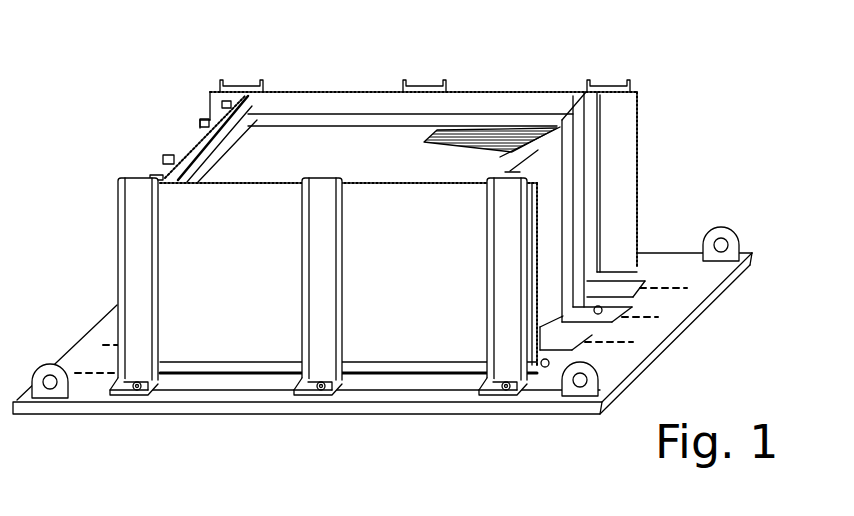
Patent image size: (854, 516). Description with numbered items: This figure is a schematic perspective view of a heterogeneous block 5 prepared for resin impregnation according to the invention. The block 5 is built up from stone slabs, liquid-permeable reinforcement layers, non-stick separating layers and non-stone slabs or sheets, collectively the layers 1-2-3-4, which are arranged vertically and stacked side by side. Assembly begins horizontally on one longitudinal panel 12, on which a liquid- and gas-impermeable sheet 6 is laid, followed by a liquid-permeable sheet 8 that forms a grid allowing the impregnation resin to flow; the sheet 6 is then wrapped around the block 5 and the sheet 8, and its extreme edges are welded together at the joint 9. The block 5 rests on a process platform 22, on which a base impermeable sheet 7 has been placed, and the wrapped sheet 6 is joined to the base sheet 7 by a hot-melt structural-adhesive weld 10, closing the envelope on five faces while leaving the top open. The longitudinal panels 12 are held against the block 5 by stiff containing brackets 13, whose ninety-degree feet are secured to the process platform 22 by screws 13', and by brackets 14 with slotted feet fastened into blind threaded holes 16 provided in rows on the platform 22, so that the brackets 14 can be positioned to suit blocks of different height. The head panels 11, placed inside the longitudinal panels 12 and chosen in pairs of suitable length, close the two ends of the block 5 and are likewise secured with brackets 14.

The layers of slabs and intermediate sheets 1-2-3-4 is at (511, 142).
The block 5 is at (313, 146).
The liquid- and gas-impermeable sheet 6 is at (278, 115).
The base impermeable sheet 7 is at (178, 391).
The liquid-permeable sheet 8 is at (431, 124).
The welded joint of the sheet 9 is at (202, 160).
The hot-melt welding joint 10 is at (255, 372).
The head panel 11 is at (550, 154).
The longitudinal panel 12 is at (407, 333).
The stiff containing bracket 13 is at (318, 336).
The screw 13' is at (323, 438).
The bracket 14 is at (424, 87).
The blind threaded hole 16 is at (658, 317).
The process platform 22 is at (472, 412).